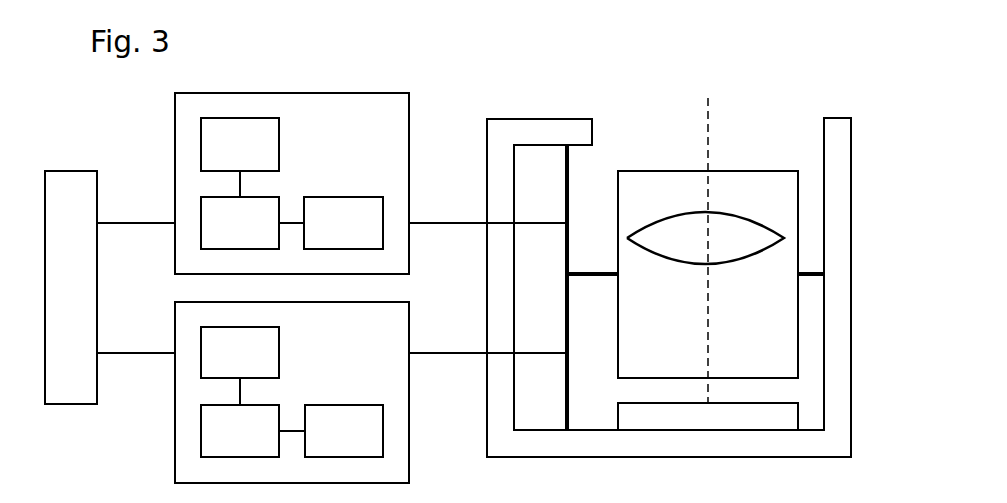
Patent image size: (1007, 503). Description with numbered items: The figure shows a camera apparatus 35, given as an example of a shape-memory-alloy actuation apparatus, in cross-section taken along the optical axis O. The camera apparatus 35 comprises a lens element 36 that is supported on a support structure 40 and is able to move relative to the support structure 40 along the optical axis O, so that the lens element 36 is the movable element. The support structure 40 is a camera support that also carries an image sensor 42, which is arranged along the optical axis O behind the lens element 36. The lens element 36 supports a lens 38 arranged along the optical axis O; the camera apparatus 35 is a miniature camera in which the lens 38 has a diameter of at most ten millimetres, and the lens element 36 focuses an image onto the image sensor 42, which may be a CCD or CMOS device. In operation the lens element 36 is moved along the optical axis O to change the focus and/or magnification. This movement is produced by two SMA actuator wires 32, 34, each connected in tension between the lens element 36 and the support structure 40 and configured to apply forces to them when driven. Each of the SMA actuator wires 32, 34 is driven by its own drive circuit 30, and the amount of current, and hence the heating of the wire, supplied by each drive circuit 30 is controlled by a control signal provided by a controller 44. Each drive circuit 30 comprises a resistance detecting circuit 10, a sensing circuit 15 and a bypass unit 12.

The resistance detecting circuit 10 is at (229, 233).
The bypass unit 12 is at (229, 155).
The sensing circuit 15 is at (332, 233).
The drive circuit 30 is at (182, 147).
The SMA actuator wire 32 is at (569, 203).
The SMA actuator wire 34 is at (568, 332).
The camera apparatus 35 is at (676, 77).
The lens element 36 is at (718, 182).
The lens 38 is at (735, 250).
The support structure 40 is at (545, 126).
The image sensor 42 is at (676, 417).
The controller 44 is at (67, 180).
The optical axis O is at (708, 157).